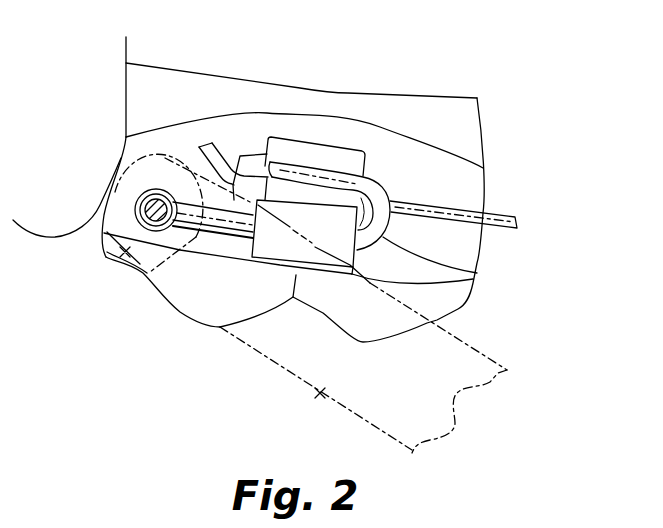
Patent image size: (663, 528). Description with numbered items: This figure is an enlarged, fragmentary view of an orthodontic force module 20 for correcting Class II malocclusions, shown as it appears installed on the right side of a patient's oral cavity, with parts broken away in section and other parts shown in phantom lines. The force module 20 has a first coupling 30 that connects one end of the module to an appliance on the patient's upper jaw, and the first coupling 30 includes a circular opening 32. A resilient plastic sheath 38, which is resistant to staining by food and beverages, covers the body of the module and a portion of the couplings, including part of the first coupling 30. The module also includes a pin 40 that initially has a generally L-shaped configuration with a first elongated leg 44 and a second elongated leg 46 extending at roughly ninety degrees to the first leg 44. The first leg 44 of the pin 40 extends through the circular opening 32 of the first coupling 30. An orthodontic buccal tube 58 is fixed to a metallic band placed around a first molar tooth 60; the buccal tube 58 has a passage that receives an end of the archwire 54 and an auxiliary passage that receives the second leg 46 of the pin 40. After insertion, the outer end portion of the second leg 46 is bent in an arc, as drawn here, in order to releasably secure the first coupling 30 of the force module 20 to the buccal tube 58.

The force module 20 is at (262, 364).
The first coupling 30 is at (113, 258).
The circular opening 32 is at (137, 183).
The plastic sheath 38 is at (318, 395).
The pin 40 is at (388, 176).
The first elongated leg 44 is at (145, 211).
The second elongated leg 46 is at (473, 279).
The archwire 54 is at (500, 210).
The buccal tube 58 is at (318, 152).
The first molar tooth 60 is at (463, 108).